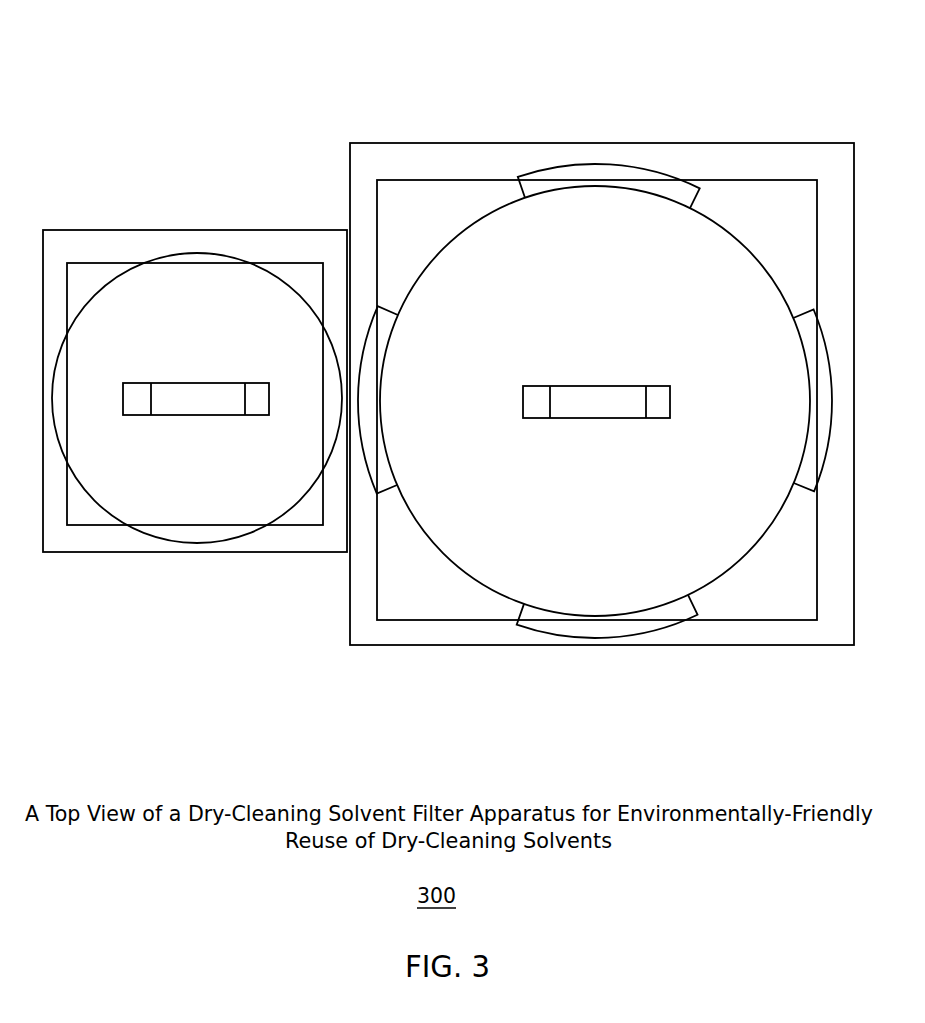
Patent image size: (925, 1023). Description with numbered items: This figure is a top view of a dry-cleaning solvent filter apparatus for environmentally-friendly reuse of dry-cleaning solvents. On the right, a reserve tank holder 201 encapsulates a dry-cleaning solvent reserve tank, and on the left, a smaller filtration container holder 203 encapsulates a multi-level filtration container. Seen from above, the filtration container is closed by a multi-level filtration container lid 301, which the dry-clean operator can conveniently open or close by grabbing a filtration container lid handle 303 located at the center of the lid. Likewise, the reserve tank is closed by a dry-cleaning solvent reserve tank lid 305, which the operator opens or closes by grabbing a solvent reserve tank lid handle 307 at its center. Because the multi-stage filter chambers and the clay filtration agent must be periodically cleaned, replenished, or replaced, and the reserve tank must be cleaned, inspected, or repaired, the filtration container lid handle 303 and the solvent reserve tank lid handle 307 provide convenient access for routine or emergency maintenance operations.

The reserve tank holder 201 is at (602, 333).
The filtration container holder 203 is at (195, 330).
The multi-level filtration container lid 301 is at (197, 354).
The filtration container lid handle 303 is at (199, 357).
The dry-cleaning solvent reserve tank lid 305 is at (595, 332).
The solvent reserve tank lid handle 307 is at (612, 359).